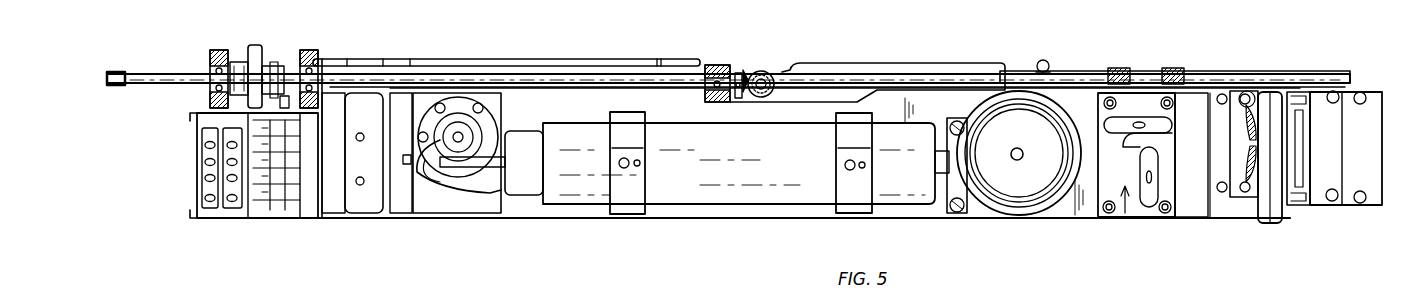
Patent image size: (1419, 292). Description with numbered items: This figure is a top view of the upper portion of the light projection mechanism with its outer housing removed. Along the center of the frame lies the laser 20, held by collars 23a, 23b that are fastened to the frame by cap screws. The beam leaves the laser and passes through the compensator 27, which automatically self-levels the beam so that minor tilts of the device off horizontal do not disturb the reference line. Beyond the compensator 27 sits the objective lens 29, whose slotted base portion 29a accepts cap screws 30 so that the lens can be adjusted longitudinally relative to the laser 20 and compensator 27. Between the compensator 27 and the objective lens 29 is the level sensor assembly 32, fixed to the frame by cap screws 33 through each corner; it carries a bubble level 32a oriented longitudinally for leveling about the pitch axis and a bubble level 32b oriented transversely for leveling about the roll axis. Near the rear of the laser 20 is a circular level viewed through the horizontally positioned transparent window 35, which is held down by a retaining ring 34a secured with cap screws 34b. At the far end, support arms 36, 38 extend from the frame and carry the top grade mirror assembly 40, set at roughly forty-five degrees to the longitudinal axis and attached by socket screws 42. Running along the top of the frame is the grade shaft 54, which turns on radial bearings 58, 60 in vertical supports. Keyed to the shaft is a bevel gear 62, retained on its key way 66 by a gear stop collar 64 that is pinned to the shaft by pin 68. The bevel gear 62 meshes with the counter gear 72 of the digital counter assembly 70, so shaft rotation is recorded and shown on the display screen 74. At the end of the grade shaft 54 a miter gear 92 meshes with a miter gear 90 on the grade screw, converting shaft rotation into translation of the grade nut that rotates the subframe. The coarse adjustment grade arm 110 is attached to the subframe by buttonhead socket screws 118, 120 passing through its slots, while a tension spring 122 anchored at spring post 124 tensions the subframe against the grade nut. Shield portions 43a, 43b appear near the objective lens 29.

The laser 20 is at (756, 160).
The collar 23a is at (627, 163).
The collar 23b is at (854, 163).
The compensator 27 is at (1010, 150).
The objective lens 29 is at (1266, 196).
The base portion 29a is at (1247, 92).
The cap screws 30 is at (1245, 197).
The level sensor assembly 32 is at (1125, 215).
The bubble level 32a is at (1110, 125).
The bubble level 32b is at (1149, 203).
The cap screws 33 is at (1108, 98).
The retaining ring 34a is at (500, 127).
The cap screws 34b is at (440, 103).
The transparent window 35 is at (458, 125).
The support arm 36 is at (1291, 92).
The support arm 38 is at (1300, 205).
The top grade mirror assembly 40 is at (418, 165).
The socket screws 42 is at (1362, 92).
The bearing portion 43a is at (1245, 118).
The bearing portion 43b is at (1245, 152).
The grade shaft 54 is at (600, 80).
The radial bearing 58 is at (318, 60).
The radial bearing 60 is at (215, 58).
The bevel gear 62 is at (255, 46).
The gear stop collar 64 is at (276, 64).
The key way 66 is at (240, 62).
The pin 68 is at (305, 54).
The digital counter assembly 70 is at (258, 190).
The counter gear 72 is at (270, 103).
The display screen 74 is at (202, 135).
The miter gear 90 is at (770, 75).
The miter gear 92 is at (748, 68).
The coarse adjustment grade arm 110 is at (1300, 72).
The buttonhead socket screw 118 is at (1171, 66).
The buttonhead socket screw 120 is at (1117, 66).
The tension spring 122 is at (1048, 60).
The spring post 124 is at (1042, 70).